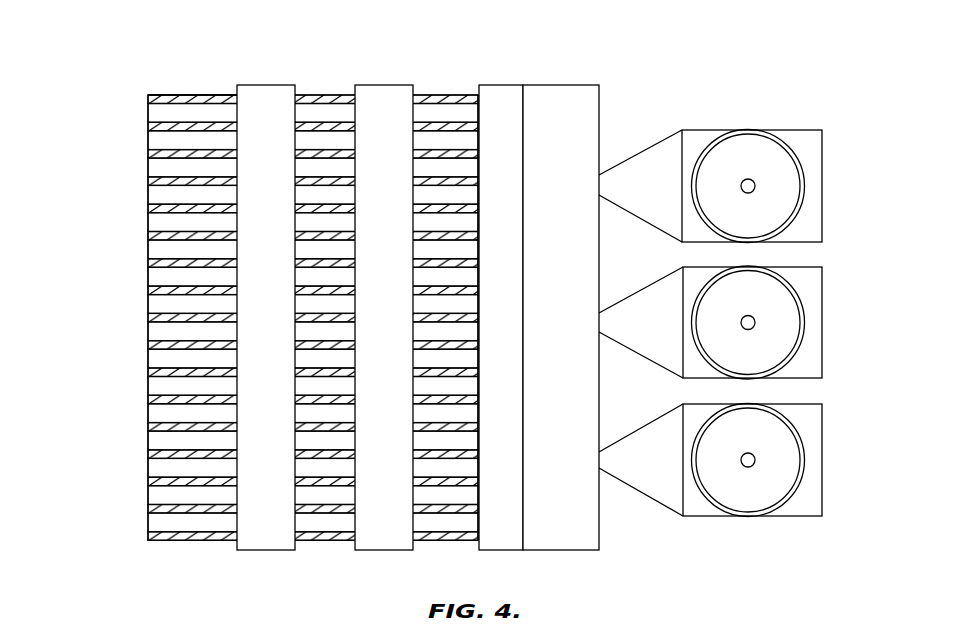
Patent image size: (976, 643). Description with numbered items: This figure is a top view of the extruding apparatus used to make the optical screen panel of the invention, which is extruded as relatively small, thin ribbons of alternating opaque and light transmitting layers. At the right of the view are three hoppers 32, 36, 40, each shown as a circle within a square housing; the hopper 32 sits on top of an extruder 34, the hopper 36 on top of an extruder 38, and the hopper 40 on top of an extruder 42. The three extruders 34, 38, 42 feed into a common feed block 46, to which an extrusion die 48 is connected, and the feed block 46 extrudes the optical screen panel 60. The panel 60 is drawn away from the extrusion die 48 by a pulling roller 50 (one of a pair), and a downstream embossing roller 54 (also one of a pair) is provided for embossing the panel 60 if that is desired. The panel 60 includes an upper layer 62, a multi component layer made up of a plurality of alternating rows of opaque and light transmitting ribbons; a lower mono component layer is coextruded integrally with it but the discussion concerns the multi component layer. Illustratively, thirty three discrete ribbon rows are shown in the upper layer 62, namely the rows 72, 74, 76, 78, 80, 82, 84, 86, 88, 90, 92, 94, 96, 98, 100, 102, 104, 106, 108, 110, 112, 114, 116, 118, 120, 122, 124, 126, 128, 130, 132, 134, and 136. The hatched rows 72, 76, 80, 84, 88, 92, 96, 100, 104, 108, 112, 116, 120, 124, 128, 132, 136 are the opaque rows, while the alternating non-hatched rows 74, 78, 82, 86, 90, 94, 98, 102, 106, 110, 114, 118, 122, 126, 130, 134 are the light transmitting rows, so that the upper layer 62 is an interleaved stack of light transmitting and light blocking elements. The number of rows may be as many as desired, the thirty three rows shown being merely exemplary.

The hopper 32 is at (780, 466).
The extruder 34 is at (787, 516).
The hopper 36 is at (780, 330).
The extruder 38 is at (822, 290).
The hopper 40 is at (778, 172).
The extruder 42 is at (800, 130).
The feed block 46 is at (567, 85).
The extrusion die 48 is at (500, 85).
The pulling roller 50 is at (380, 85).
The embossing roller 54 is at (268, 85).
The optical screen panel 60 is at (160, 88).
The upper layer 62 is at (181, 95).
The opaque row 72 is at (148, 99).
The light transmitting row 74 is at (148, 113).
The opaque row 76 is at (148, 126).
The light transmitting row 78 is at (148, 140).
The opaque row 80 is at (148, 154).
The light transmitting row 82 is at (148, 168).
The opaque row 84 is at (148, 181).
The light transmitting row 86 is at (148, 195).
The opaque row 88 is at (148, 208).
The light transmitting row 90 is at (148, 222).
The opaque row 92 is at (148, 236).
The light transmitting row 94 is at (148, 249).
The opaque row 96 is at (148, 263).
The light transmitting row 98 is at (148, 277).
The opaque row 100 is at (148, 290).
The light transmitting row 102 is at (148, 304).
The opaque row 104 is at (148, 318).
The light transmitting row 106 is at (148, 331).
The opaque row 108 is at (148, 345).
The light transmitting row 110 is at (148, 359).
The opaque row 112 is at (148, 372).
The light transmitting row 114 is at (148, 386).
The opaque row 116 is at (148, 400).
The light transmitting row 118 is at (148, 413).
The opaque row 120 is at (148, 427).
The light transmitting row 122 is at (148, 440).
The opaque row 124 is at (148, 454).
The light transmitting row 126 is at (148, 468).
The opaque row 128 is at (148, 482).
The light transmitting row 130 is at (148, 495).
The opaque row 132 is at (148, 509).
The light transmitting row 134 is at (148, 522).
The opaque row 136 is at (148, 538).